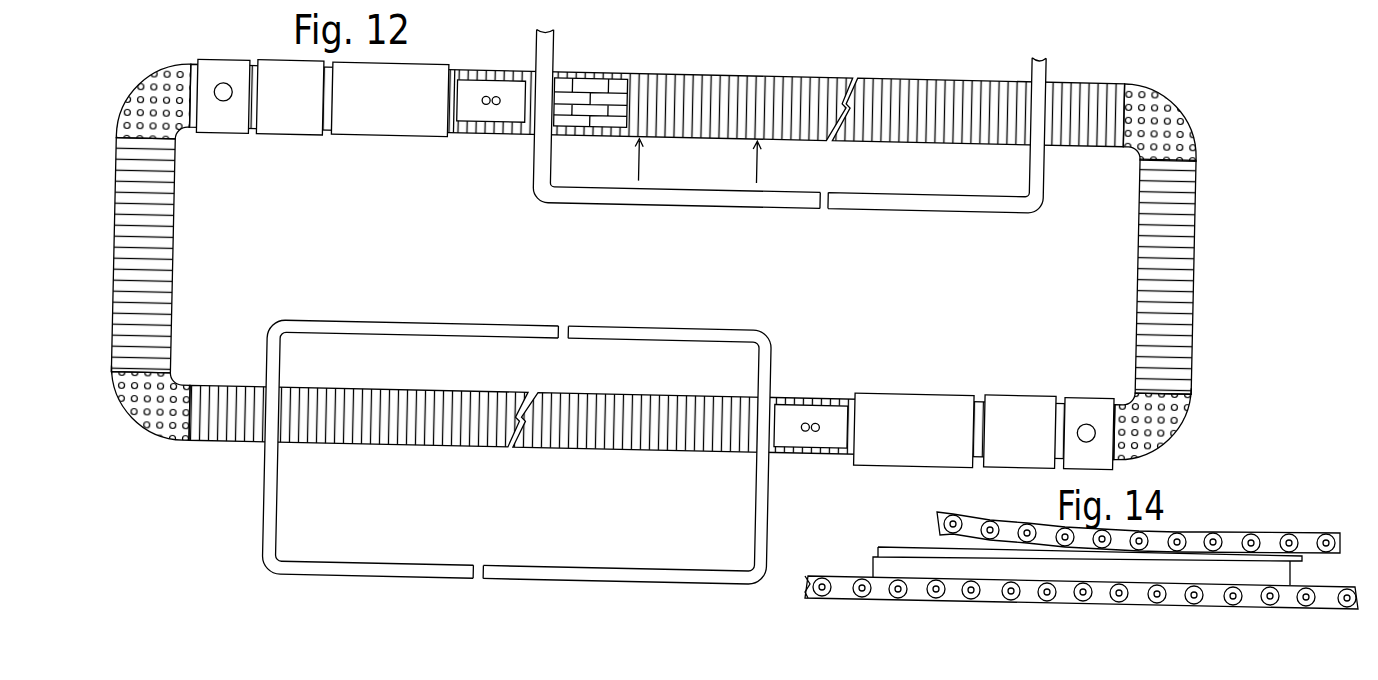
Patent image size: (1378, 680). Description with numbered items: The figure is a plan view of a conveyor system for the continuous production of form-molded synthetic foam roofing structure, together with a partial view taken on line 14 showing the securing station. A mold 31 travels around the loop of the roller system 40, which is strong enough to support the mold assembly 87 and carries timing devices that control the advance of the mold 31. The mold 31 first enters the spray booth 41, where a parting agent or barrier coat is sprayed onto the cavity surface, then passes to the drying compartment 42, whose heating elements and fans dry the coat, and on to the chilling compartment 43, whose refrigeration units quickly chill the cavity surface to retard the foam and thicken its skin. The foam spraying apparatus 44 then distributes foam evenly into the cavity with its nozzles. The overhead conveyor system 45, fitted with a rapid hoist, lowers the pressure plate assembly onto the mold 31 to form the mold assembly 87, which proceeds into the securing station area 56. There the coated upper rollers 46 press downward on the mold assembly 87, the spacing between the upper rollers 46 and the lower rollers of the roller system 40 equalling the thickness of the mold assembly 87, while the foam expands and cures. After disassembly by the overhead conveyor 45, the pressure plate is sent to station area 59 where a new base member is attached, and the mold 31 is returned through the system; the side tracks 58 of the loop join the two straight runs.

In FIG. 12, the section line 14 is at (700, 161).
In FIG. 12, the mold 31 is at (582, 90).
In FIG. 12, the roller system 40 is at (1123, 166).
In FIG. 14, the roller system 40 is at (1238, 603).
In FIG. 12, the spray booth 41 is at (218, 118).
In FIG. 12, the drying compartment 42 is at (289, 118).
In FIG. 12, the chilling compartment 43 is at (385, 123).
In FIG. 12, the foam spraying apparatus 44 is at (497, 113).
In FIG. 12, the overhead conveyor system 45 is at (805, 203).
In FIG. 14, the upper rollers 46 is at (1323, 535).
In FIG. 14, the securing station area 56 is at (1081, 607).
In FIG. 12, the side conveyor track 58 is at (654, 262).
In FIG. 12, the station area 59 is at (516, 452).
In FIG. 14, the mold assembly 87 is at (902, 560).